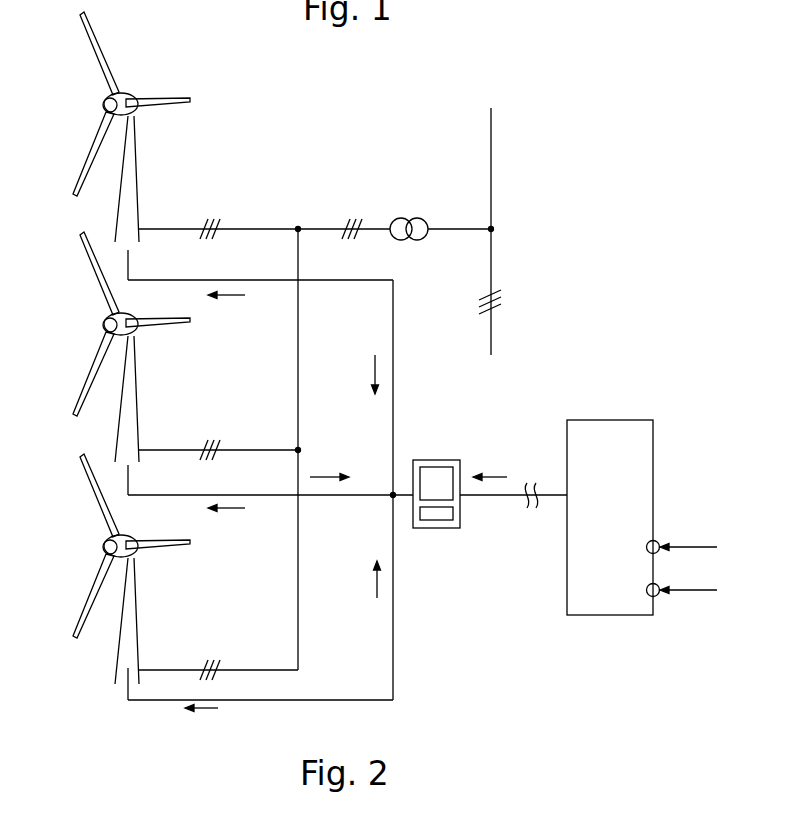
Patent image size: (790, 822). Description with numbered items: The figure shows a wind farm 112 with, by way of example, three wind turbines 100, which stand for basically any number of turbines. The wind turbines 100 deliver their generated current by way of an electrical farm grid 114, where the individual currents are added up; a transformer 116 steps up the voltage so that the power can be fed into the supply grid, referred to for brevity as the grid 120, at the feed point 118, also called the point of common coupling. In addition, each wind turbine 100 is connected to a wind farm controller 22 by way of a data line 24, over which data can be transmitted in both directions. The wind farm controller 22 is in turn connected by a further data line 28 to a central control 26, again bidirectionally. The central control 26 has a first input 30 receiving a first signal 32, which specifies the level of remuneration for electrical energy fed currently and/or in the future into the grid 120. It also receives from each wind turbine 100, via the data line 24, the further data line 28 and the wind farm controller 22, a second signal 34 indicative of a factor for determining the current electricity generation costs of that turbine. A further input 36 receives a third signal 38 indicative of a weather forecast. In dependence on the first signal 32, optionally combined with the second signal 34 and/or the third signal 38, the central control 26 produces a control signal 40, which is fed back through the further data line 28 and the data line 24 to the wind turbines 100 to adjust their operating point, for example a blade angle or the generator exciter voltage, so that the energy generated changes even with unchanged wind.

The wind turbine 100 is at (132, 168).
The wind farm 112 is at (396, 127).
The electrical farm grid 114 is at (312, 227).
The transformer 116 is at (410, 200).
The feed point 118 is at (505, 210).
The grid 120 is at (492, 141).
The wind farm controller 22 is at (440, 459).
The data line 24 is at (393, 637).
The central control 26 is at (656, 458).
The further data line 28 is at (473, 497).
The first input 30 is at (656, 542).
The first signal 32 is at (690, 546).
The second signal 34 is at (375, 372).
The further input 36 is at (660, 597).
The third signal 38 is at (690, 592).
The control signal 40 is at (245, 295).